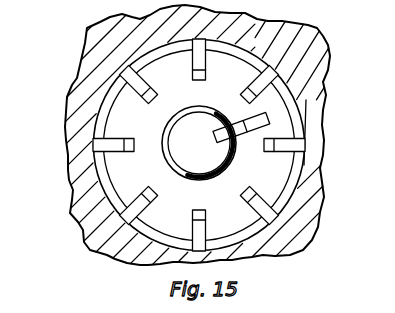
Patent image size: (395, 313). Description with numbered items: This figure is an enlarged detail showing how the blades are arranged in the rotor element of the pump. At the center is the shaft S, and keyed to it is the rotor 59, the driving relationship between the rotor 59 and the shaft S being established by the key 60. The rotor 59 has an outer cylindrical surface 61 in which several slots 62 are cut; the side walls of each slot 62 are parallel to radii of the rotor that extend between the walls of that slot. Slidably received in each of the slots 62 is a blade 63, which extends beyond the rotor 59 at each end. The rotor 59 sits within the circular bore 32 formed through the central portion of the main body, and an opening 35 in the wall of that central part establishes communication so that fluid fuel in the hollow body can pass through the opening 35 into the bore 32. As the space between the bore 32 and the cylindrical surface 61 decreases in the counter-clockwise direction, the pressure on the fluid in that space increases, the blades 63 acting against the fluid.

The bore 32 is at (256, 28).
The opening 35 is at (312, 140).
The rotor 59 is at (128, 124).
The key 60 is at (247, 134).
The outer cylindrical surface 61 is at (246, 66).
The slot 62 is at (154, 100).
The blade 63 is at (120, 152).
The shaft S is at (203, 166).